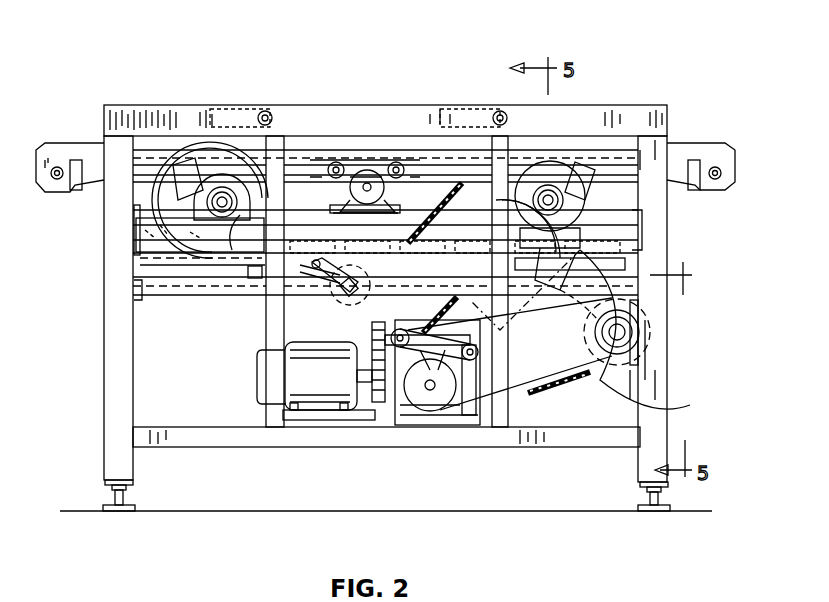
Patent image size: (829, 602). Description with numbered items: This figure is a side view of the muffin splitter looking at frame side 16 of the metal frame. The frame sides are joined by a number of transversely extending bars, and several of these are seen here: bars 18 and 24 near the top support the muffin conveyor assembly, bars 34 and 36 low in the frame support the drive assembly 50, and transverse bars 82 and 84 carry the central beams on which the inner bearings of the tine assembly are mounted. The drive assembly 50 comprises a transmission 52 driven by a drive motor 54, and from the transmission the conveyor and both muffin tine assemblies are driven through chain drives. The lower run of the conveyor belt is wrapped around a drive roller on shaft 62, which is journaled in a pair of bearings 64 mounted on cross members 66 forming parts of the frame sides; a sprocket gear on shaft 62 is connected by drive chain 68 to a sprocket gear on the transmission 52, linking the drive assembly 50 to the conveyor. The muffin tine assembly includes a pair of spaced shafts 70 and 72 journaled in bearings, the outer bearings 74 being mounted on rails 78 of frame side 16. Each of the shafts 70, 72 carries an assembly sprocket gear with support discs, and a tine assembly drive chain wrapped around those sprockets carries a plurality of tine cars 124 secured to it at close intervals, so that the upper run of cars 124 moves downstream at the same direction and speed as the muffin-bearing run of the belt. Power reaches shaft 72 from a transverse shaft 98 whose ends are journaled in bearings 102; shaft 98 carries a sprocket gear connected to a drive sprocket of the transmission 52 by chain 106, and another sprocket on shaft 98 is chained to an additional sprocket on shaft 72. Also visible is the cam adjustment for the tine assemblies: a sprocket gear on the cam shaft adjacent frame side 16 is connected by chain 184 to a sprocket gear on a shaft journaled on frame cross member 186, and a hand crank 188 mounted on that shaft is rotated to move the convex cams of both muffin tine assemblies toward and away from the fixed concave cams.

The frame side 16 is at (664, 355).
The transversely extending bar 18 is at (650, 200).
The transversely extending bar 24 is at (125, 205).
The transversely extending bar 34 is at (478, 438).
The transversely extending bar 36 is at (268, 438).
The drive assembly 50 is at (250, 380).
The transmission 52 is at (410, 410).
The drive motor 54 is at (313, 373).
The shaft 62 is at (365, 185).
The bearing 64 is at (369, 170).
The cross member 66 is at (282, 242).
The drive chain 68 is at (372, 302).
The shaft 70 is at (224, 214).
The shaft 72 is at (580, 170).
The bearing 74 is at (225, 213).
The rail 78 is at (165, 248).
The transverse bar 82 is at (130, 300).
The transverse bar 84 is at (655, 298).
The transverse shaft 98 is at (625, 335).
The bearing 102 is at (570, 337).
The chain 106 is at (562, 392).
The tine car 124 is at (188, 148).
The chain 184 is at (418, 197).
The frame cross member 186 is at (318, 292).
The hand crank 188 is at (318, 283).